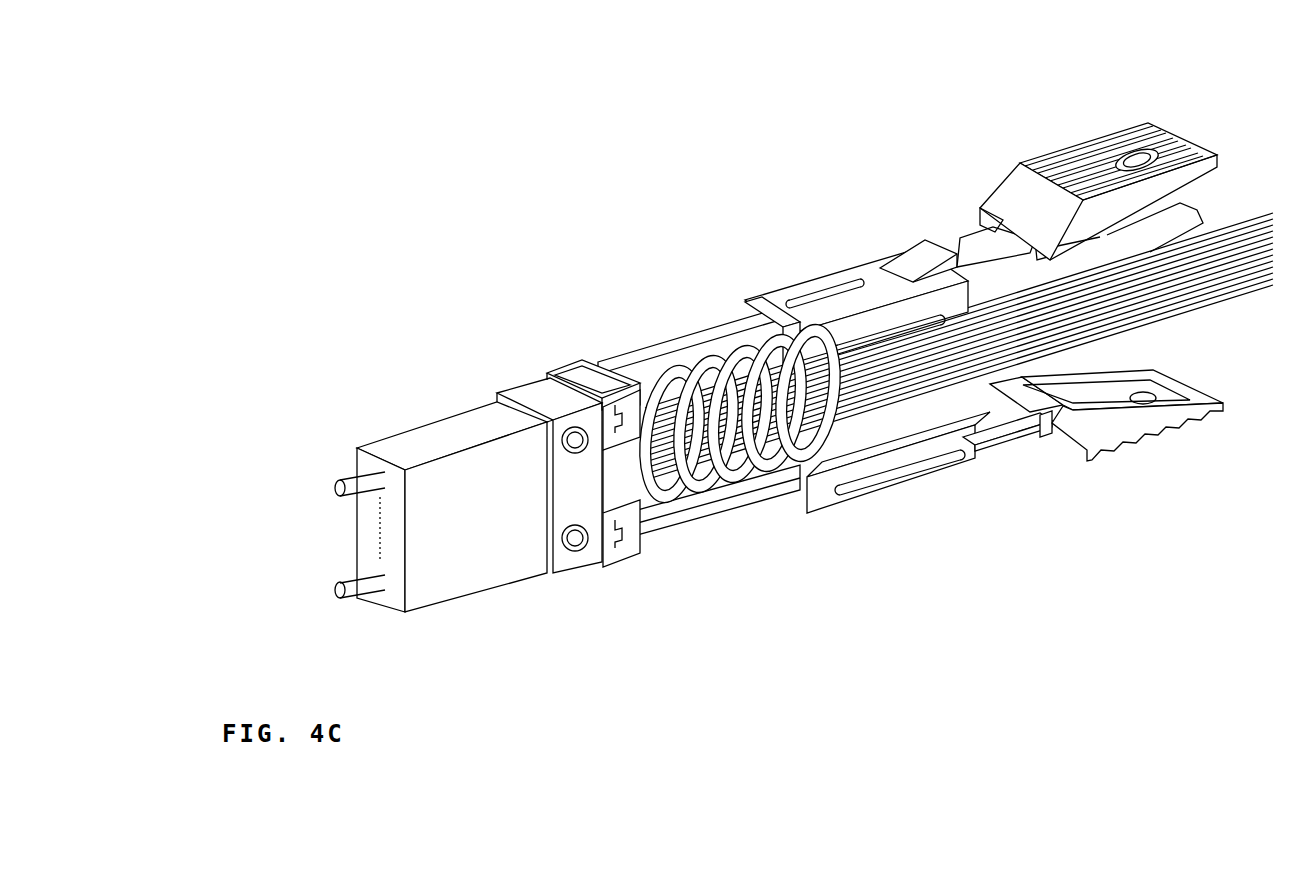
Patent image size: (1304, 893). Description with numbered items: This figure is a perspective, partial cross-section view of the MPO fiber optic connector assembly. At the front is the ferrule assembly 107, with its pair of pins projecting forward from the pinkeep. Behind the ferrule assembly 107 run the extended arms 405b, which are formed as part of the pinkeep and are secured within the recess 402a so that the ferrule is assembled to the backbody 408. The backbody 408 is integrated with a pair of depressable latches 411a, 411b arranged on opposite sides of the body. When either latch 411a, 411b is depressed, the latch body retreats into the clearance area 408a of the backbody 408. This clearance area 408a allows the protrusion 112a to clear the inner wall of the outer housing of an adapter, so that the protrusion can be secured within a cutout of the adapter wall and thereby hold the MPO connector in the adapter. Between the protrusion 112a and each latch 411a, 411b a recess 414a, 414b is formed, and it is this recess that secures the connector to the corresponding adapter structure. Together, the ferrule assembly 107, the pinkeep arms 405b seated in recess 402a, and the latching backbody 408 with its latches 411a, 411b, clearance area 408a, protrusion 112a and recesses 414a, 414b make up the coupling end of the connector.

The ferrule assembly 107 is at (420, 447).
The extended arms 405b is at (655, 352).
The recess 402a is at (785, 317).
The backbody 408 is at (825, 302).
The clearance area 408a is at (912, 455).
The protrusion 112a is at (938, 262).
The recess 414a is at (978, 238).
The recess 414b is at (1013, 445).
The depressable latch 411a is at (1025, 183).
The depressable latch 411b is at (1105, 418).